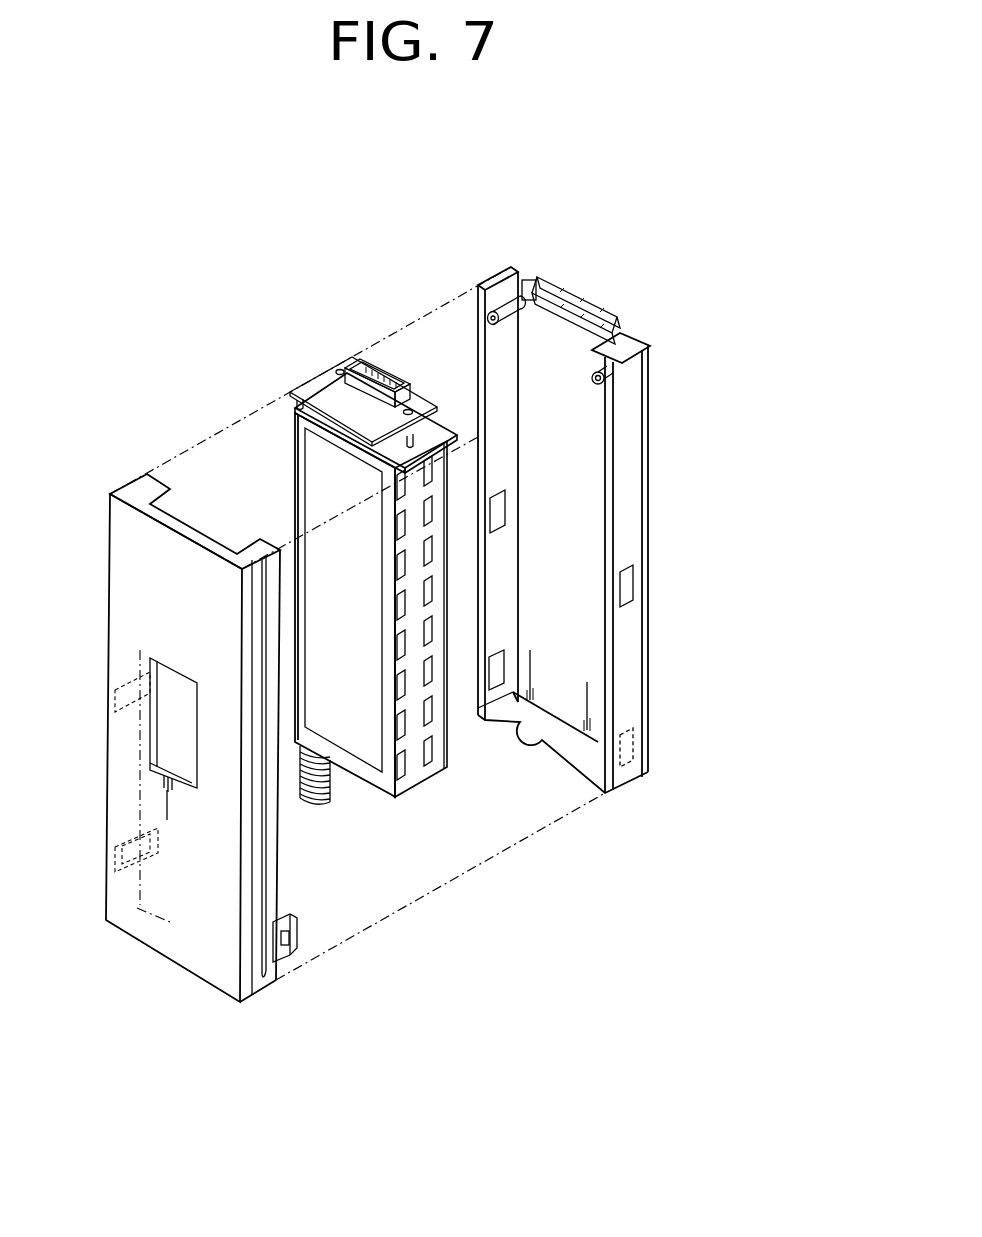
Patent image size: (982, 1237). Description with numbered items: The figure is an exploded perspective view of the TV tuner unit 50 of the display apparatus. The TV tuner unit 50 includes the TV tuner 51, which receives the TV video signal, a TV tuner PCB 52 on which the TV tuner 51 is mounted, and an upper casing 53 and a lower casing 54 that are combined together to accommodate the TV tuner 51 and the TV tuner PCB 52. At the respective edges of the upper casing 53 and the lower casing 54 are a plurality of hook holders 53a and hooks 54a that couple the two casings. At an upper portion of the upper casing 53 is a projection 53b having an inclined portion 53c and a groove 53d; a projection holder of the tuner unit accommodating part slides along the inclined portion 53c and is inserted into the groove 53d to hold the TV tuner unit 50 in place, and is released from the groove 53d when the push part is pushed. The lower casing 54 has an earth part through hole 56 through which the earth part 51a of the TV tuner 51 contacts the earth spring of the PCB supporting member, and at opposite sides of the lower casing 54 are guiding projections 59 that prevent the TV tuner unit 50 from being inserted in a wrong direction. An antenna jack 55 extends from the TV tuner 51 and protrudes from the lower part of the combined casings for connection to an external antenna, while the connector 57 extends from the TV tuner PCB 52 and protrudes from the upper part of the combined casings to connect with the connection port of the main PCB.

The TV tuner unit 50 is at (742, 364).
The TV tuner 51 is at (405, 778).
The earth part 51a is at (330, 621).
The TV tuner PCB 52 is at (447, 762).
The upper casing 53 is at (615, 773).
The hook holders 53a is at (498, 530).
The projection 53b is at (588, 298).
The inclined portion 53c is at (540, 297).
The groove 53d is at (600, 315).
The lower casing 54 is at (172, 950).
The hooks 54a is at (296, 942).
The antenna jack 55 is at (335, 793).
The earth part through hole 56 is at (168, 755).
The connector 57 is at (379, 363).
The guiding projections 59 is at (262, 990).